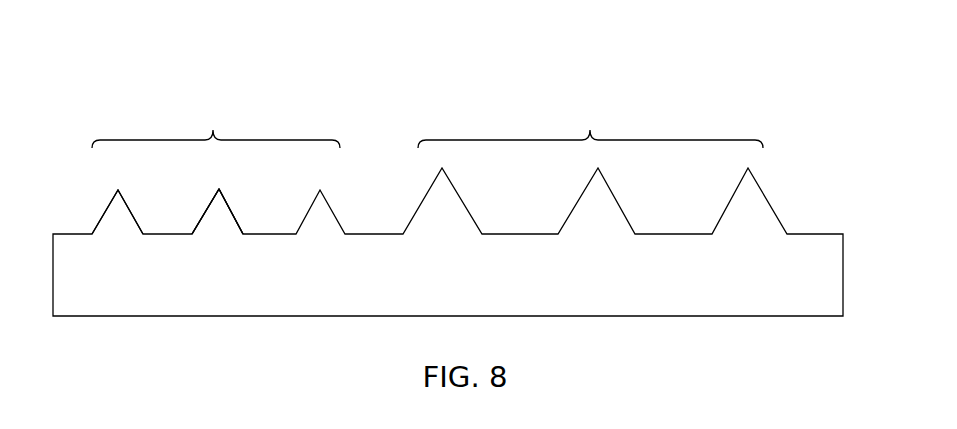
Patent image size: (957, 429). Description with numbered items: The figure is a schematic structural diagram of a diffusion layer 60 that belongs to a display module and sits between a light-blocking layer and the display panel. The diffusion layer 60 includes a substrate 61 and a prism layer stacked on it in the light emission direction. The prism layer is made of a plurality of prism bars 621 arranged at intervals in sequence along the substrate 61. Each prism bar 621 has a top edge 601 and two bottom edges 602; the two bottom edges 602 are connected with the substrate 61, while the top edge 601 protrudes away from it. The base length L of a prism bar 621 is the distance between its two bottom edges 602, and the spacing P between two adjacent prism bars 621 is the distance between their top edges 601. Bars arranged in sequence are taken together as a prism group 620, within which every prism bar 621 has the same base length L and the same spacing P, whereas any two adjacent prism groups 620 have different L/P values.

The diffusion layer 60 is at (77, 45).
The substrate 61 is at (820, 272).
The prism group 620 is at (427, 124).
The prism bar 621 is at (102, 217).
The top edge 601 is at (222, 187).
The bottom edge 602 is at (194, 235).
The spacing P is at (746, 168).
The base length L is at (714, 234).